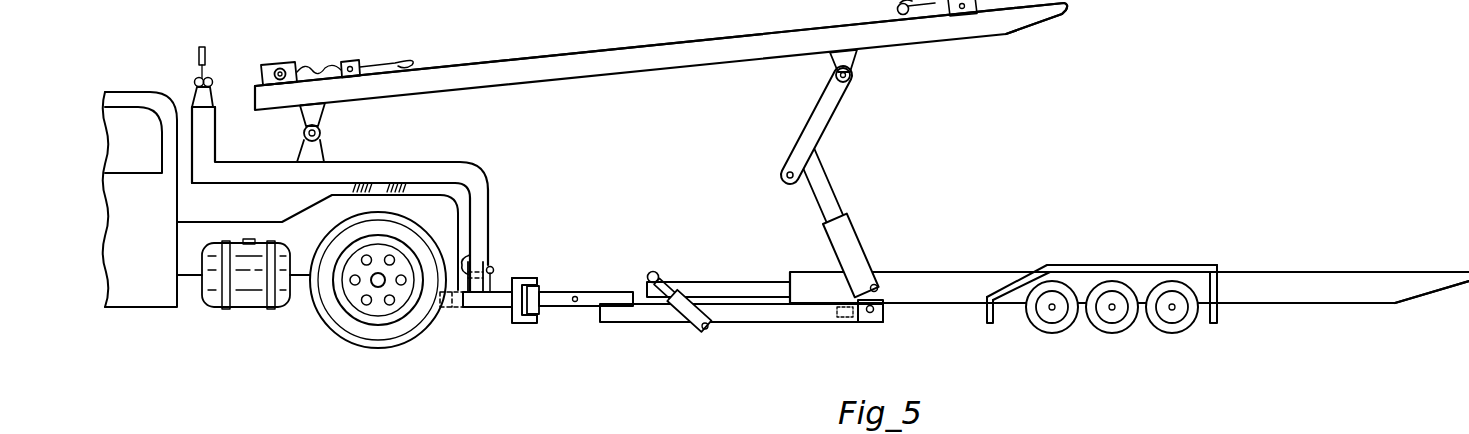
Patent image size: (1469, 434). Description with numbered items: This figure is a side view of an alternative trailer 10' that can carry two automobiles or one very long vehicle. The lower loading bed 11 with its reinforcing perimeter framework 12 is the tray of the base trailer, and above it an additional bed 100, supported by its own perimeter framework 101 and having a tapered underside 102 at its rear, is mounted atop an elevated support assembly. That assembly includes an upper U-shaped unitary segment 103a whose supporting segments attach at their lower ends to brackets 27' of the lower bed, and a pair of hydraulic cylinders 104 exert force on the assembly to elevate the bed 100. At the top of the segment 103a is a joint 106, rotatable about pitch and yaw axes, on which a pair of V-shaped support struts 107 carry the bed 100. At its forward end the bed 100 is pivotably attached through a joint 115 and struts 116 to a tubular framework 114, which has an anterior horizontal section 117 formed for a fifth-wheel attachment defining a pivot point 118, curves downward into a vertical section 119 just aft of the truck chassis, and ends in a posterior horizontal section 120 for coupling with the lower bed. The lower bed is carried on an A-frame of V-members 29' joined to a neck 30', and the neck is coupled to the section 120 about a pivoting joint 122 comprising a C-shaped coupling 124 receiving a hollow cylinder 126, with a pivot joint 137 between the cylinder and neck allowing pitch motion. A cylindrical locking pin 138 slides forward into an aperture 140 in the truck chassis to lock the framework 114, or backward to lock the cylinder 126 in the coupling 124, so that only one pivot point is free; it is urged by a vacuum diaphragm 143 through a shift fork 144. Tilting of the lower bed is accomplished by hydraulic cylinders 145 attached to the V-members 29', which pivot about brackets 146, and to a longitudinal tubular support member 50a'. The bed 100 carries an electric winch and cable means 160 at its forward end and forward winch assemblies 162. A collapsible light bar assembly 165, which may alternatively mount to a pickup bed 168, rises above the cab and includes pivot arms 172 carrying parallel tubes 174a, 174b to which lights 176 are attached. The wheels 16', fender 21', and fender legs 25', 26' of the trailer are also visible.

The additional bed 100 is at (661, 55).
The perimeter framework 101 is at (668, 46).
The tapered underside 102 is at (1029, 22).
The upper U-shaped unitary segment 103a is at (830, 113).
The hydraulic cylinders 104 is at (858, 232).
The joint 106 is at (853, 77).
The support struts 107 is at (833, 57).
The trailer 10' is at (1034, 211).
The loading bed 11 is at (1328, 270).
The tubular framework 114 is at (367, 199).
The joint 115 is at (325, 137).
The support struts 116 is at (325, 112).
The anterior horizontal section 117 is at (262, 176).
The pivot point 118 is at (342, 187).
The vertical section 119 is at (482, 200).
The posterior horizontal section 120 is at (489, 308).
The pivoting joint 122 is at (551, 311).
The C-shaped coupling 124 is at (531, 277).
The hollow cylinder 126 is at (540, 286).
The pivot joint 137 is at (578, 303).
The cylindrical locking pin 138 is at (463, 307).
The aperture 140 is at (455, 318).
The vacuum diaphragm 143 is at (463, 260).
The shift fork 144 is at (492, 276).
The hydraulic cylinders 145 is at (683, 318).
The brackets 146 is at (837, 318).
The reinforcing perimeter framework 12 is at (952, 300).
The electric winch and cable means 160 is at (282, 66).
The forward pair of winch assemblies 162 is at (352, 63).
The light bar assembly 165 is at (204, 73).
The bed 168 is at (216, 150).
The pivot arms 172 is at (193, 97).
The tube 174a is at (211, 79).
The tube 174b is at (197, 79).
The lights 176 is at (202, 46).
The trailer wheels 16' is at (1112, 326).
The fender 21' is at (1114, 292).
The rear fender leg 25' is at (1234, 307).
The front fender leg 26' is at (984, 327).
The brackets 27' is at (882, 329).
The V-members 29' is at (741, 332).
The neck 30' is at (586, 301).
The longitudinal tubular support member 50a' is at (718, 269).